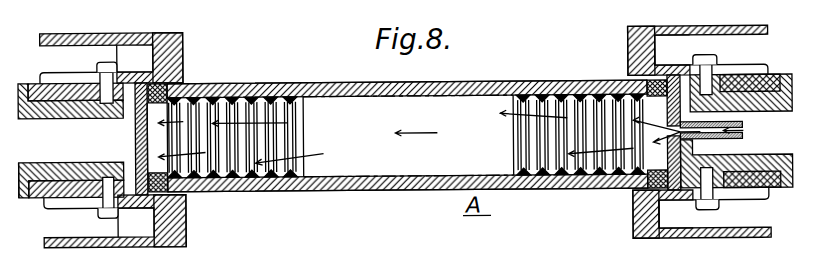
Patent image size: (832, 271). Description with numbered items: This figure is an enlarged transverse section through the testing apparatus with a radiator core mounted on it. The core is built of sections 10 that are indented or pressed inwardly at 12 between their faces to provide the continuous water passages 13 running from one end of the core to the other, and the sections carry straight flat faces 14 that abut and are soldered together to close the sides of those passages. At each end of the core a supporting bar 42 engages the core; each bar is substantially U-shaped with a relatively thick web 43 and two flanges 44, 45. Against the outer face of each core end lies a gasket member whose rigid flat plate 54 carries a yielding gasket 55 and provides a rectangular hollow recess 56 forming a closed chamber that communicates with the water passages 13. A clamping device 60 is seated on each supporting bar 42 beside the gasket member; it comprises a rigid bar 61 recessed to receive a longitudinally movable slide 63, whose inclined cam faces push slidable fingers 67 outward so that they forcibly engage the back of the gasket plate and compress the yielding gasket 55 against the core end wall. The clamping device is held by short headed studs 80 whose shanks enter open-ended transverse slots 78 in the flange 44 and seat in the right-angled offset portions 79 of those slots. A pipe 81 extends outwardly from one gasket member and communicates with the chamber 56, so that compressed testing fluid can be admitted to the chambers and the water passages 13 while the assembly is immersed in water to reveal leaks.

The section 10 is at (407, 124).
The indented portion 12 is at (252, 135).
The water passage 13 is at (405, 151).
The flat face 14 is at (269, 86).
The supporting bar 42 is at (405, 135).
The web 43 is at (184, 46).
The flange 44 is at (673, 76).
The flange 45 is at (738, 31).
The flat plate 54 is at (148, 128).
The yielding gasket 55 is at (182, 83).
The hollow recess 56 is at (160, 142).
The clamping device 60 is at (406, 141).
The rigid bar 61 is at (43, 197).
The slide 63 is at (33, 92).
The finger 67 is at (131, 82).
The transverse slot 78 is at (68, 79).
The offset portion 79 is at (99, 212).
The headed stud 80 is at (106, 61).
The pipe 81 is at (731, 125).